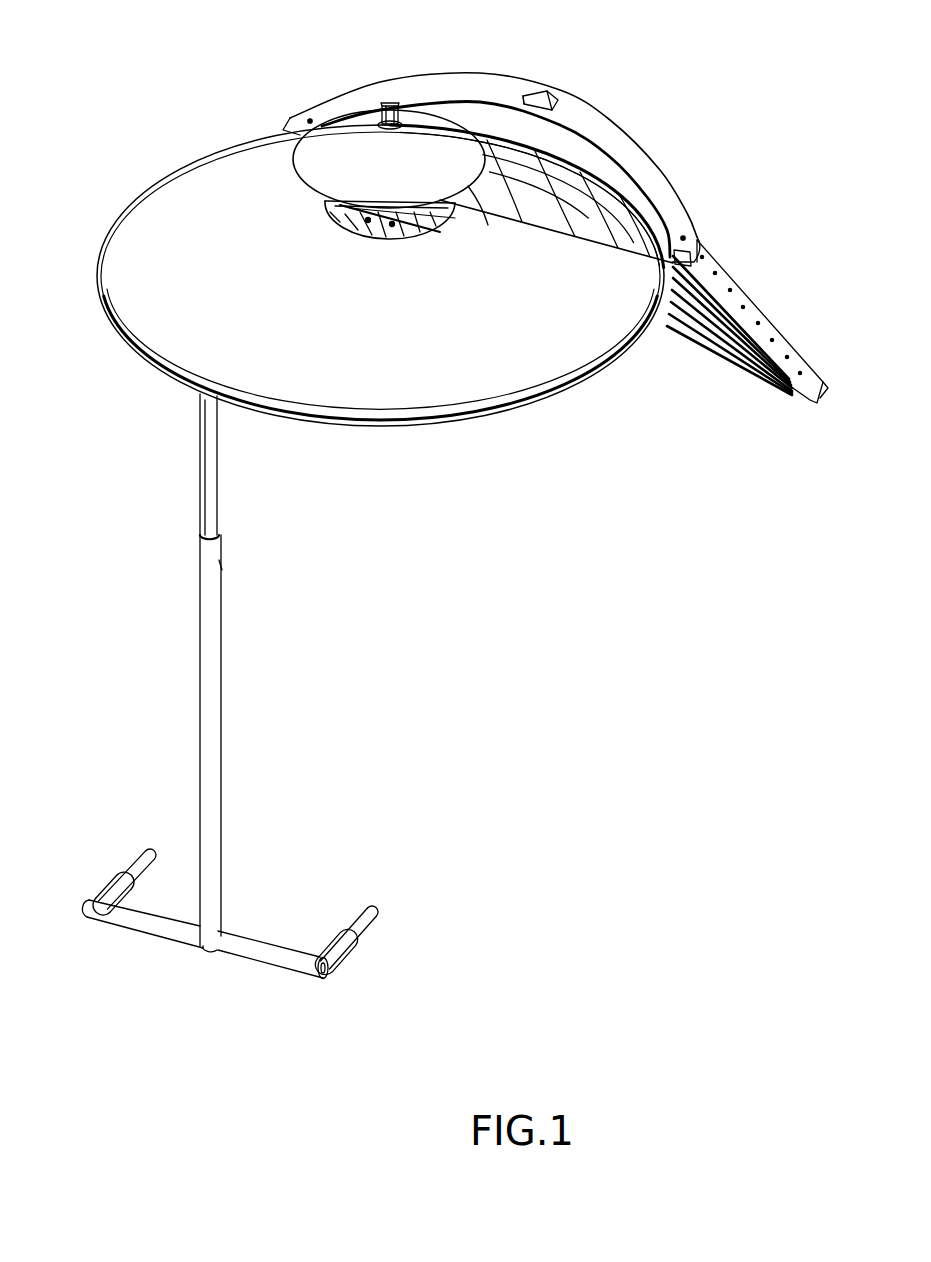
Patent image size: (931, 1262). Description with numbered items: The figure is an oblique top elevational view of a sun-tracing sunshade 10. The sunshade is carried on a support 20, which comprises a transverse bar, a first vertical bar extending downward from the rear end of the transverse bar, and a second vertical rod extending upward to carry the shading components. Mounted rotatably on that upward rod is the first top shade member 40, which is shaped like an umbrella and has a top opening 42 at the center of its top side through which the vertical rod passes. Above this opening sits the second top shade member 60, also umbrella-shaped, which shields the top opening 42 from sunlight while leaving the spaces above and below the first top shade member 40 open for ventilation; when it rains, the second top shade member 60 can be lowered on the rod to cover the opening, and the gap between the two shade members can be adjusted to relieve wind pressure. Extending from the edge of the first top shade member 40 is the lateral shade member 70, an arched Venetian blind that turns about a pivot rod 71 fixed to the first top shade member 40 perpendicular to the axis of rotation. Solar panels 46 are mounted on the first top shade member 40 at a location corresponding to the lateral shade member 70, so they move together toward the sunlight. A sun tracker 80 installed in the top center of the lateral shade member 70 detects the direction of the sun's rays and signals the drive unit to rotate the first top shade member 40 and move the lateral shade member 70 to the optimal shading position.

The sun-tracing sunshade 10 is at (205, 103).
The support 20 is at (193, 700).
The first top shade member 40 is at (150, 188).
The top opening 42 is at (395, 228).
The solar panels 46 is at (586, 178).
The second top shade member 60 is at (368, 130).
The lateral shade member 70 is at (766, 303).
The pivot rod 71 is at (692, 264).
The sun tracker 80 is at (548, 98).